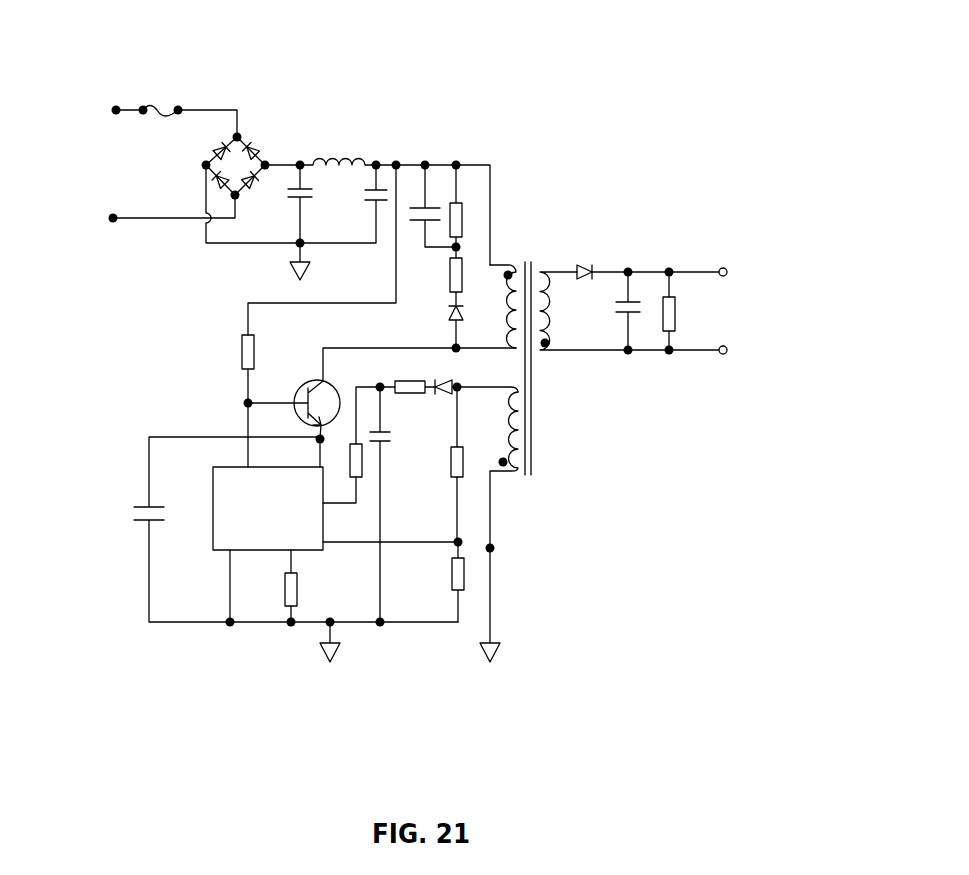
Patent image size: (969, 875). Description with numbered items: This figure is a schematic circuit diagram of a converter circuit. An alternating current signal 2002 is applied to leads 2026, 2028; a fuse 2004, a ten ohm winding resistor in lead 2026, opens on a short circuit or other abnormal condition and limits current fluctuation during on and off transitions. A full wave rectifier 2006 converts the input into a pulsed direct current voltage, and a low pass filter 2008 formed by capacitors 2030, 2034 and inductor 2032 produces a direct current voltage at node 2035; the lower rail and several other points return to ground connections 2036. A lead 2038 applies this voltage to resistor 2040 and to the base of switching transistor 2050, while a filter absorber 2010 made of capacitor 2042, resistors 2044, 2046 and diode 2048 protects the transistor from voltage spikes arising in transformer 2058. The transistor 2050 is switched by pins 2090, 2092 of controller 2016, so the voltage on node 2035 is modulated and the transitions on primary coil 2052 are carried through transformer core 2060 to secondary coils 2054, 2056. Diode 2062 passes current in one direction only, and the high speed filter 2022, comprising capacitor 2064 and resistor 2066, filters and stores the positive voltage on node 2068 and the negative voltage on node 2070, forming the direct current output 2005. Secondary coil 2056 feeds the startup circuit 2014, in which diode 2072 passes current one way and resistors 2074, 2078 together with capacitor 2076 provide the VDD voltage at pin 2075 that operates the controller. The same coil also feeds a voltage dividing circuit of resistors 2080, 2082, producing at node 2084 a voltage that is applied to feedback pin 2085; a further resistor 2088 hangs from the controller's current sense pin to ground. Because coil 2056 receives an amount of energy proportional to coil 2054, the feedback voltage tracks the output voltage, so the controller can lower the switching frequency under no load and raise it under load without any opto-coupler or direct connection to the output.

The alternating current signal 2002 is at (80, 131).
The fuse 2004 is at (162, 105).
The DC output 2005 is at (728, 374).
The full wave rectifier 2006 is at (254, 127).
The low pass filter 2008 is at (373, 120).
The filter absorber 2010 is at (521, 159).
The startup circuit 2014 is at (392, 514).
The controller 2016 is at (214, 494).
The high speed filter 2022 is at (673, 251).
The lead 2026 is at (143, 105).
The lead 2028 is at (128, 223).
The capacitor 2030 is at (291, 199).
The inductor 2032 is at (350, 158).
The capacitor 2034 is at (364, 194).
The node 2035 is at (398, 163).
The ground 2036 is at (292, 269).
The lead 2038 is at (395, 258).
The resistor 2040 is at (242, 353).
The capacitor 2042 is at (437, 205).
The resistor 2044 is at (463, 210).
The resistor 2046 is at (450, 268).
The diode 2048 is at (448, 312).
The switching transistor 2050 is at (299, 392).
The primary coil 2052 is at (516, 313).
The secondary coil 2054 is at (546, 303).
The secondary coil 2056 is at (517, 414).
The transformer 2058 is at (548, 251).
The transformer core 2060 is at (533, 375).
The diode 2062 is at (587, 267).
The capacitor 2064 is at (622, 310).
The resistor 2066 is at (677, 311).
The node 2068 is at (728, 268).
The node 2070 is at (719, 355).
The diode 2072 is at (456, 384).
The resistor 2074 is at (410, 382).
The pin 2075 is at (337, 504).
The capacitor 2076 is at (392, 437).
The resistor 2078 is at (364, 470).
The resistor 2080 is at (451, 463).
The resistor 2082 is at (452, 573).
The node 2084 is at (457, 541).
The feedback pin 2085 is at (336, 545).
The resistor 2088 is at (298, 588).
The pin 2090 is at (246, 460).
The pin 2092 is at (319, 462).